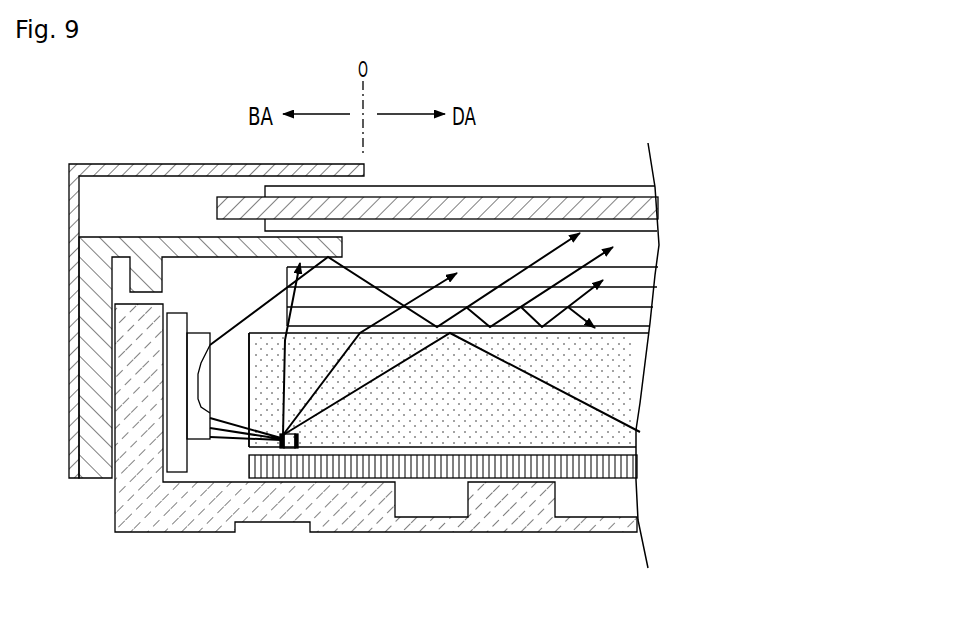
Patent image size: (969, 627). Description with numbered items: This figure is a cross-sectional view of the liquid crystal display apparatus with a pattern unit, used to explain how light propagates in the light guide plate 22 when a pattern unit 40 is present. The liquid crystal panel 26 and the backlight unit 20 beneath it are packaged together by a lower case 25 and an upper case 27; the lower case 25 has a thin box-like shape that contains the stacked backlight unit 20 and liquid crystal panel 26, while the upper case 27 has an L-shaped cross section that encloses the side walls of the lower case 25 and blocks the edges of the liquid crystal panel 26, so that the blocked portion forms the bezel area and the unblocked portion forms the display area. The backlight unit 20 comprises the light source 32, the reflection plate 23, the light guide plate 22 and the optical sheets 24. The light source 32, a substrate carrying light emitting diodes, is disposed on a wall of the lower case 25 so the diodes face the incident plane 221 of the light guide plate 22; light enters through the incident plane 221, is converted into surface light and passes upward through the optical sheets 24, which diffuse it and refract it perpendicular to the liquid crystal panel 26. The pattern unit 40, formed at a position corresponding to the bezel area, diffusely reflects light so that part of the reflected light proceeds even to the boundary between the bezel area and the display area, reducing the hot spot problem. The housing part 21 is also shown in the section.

The backlight unit 20 is at (725, 243).
The housing / frame 21 is at (92, 333).
The light guide plate 22 is at (445, 430).
The incident plane 221 is at (248, 408).
The reflection plate 23 is at (576, 466).
The optical sheets 24 is at (668, 267).
The lower case 25 is at (357, 524).
The liquid crystal panel 26 is at (668, 187).
The upper case 27 is at (140, 164).
The light source 32 is at (177, 418).
The pattern unit 40 is at (296, 450).